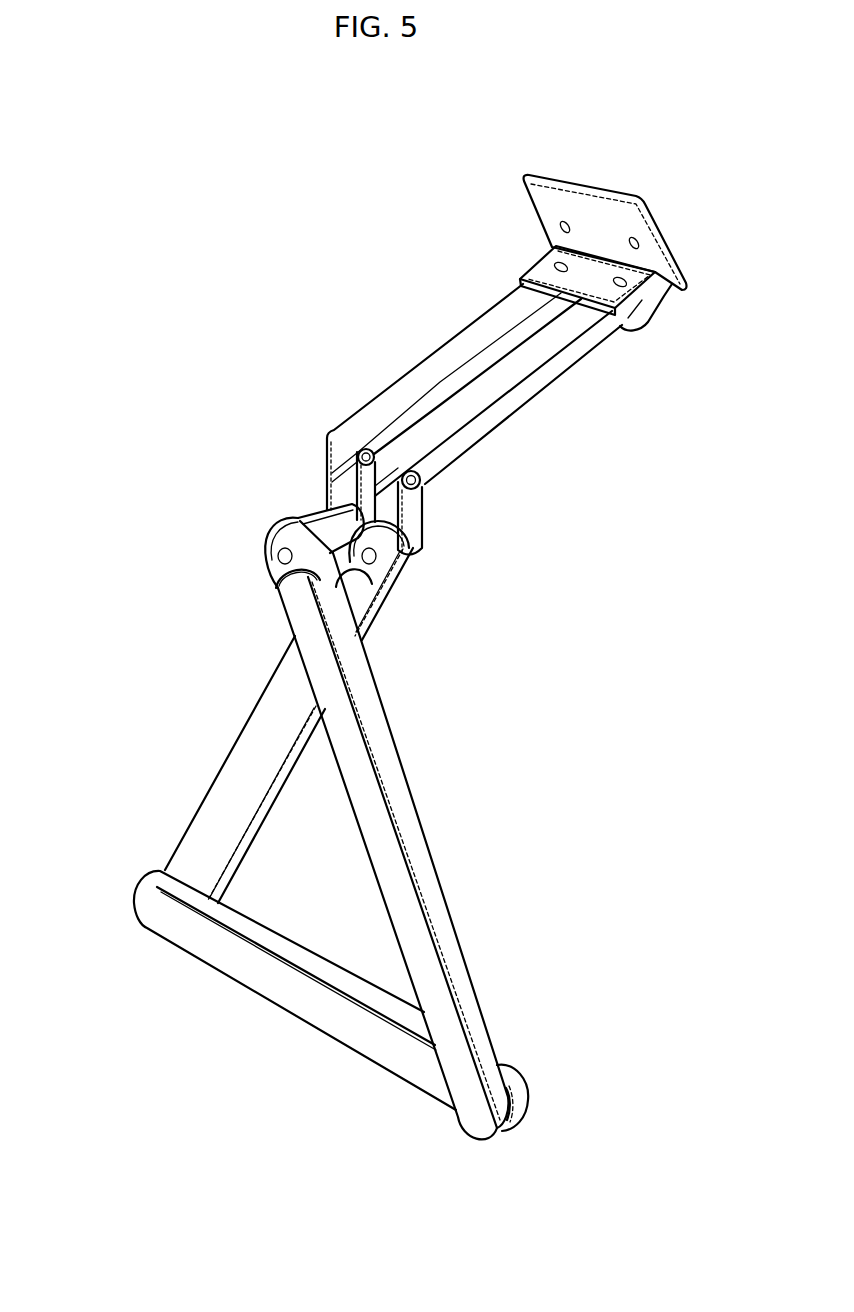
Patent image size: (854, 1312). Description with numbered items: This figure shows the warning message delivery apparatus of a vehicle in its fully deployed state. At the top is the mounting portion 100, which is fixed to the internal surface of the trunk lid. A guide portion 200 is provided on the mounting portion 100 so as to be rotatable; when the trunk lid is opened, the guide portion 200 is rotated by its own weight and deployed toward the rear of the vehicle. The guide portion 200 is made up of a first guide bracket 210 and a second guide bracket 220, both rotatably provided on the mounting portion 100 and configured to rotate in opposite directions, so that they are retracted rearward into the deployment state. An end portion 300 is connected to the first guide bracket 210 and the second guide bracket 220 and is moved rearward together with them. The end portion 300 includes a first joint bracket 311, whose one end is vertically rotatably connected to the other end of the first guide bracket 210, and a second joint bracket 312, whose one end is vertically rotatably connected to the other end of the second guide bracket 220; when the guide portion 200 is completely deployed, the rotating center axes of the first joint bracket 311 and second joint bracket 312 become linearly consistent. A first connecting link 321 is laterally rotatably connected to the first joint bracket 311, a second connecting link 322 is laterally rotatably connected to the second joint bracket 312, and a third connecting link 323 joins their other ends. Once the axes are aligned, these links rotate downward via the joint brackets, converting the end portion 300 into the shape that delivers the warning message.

The mounting portion 100 is at (588, 172).
The guide portion 200 is at (500, 397).
The first guide bracket 210 is at (430, 370).
The second guide bracket 220 is at (508, 408).
The end portion 300 is at (305, 768).
The first joint bracket 311 is at (337, 490).
The second joint bracket 312 is at (418, 527).
The first connecting link 321 is at (418, 848).
The second connecting link 322 is at (242, 768).
The third connecting link 323 is at (313, 1010).